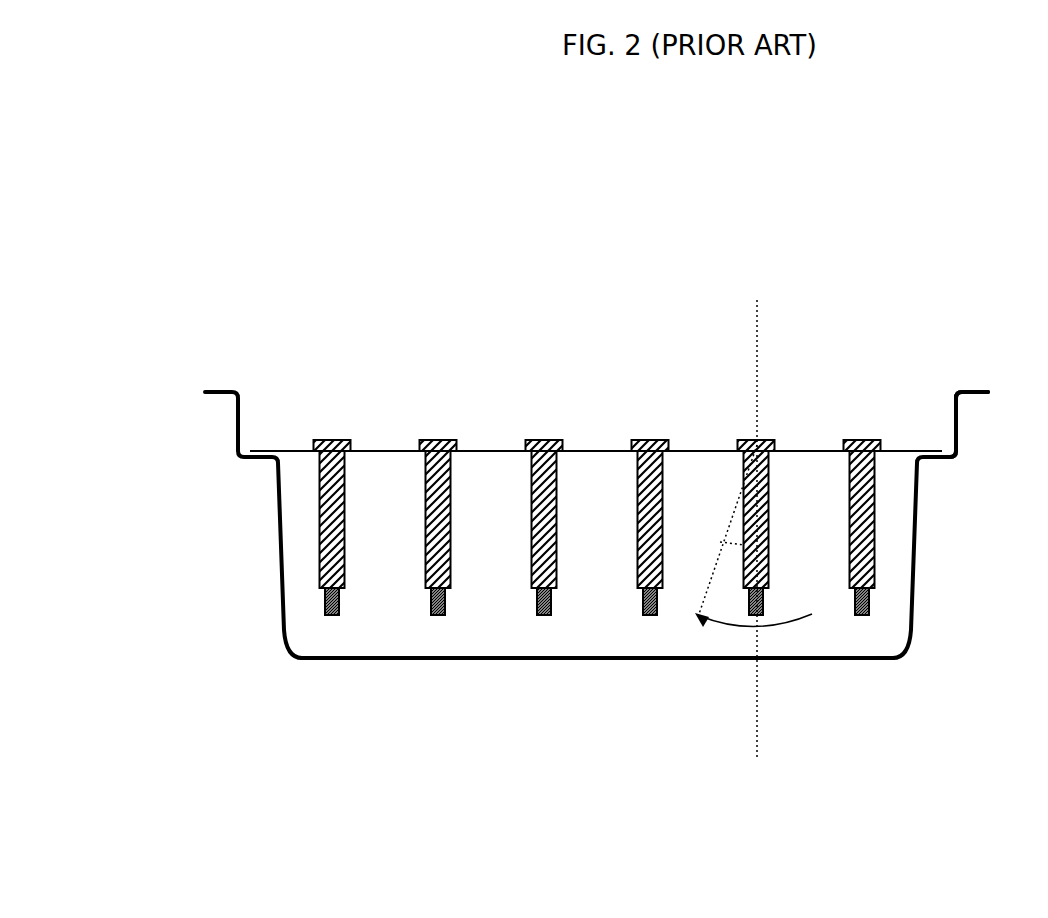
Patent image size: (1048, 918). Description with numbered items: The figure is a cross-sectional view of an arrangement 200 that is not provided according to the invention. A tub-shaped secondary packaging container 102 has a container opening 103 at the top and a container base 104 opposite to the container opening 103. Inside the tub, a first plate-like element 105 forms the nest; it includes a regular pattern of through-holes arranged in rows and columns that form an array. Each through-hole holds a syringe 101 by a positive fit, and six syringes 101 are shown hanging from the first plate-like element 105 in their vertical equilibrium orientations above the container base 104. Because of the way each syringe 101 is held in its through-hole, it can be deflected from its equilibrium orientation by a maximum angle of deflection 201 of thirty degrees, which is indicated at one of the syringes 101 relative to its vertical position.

The arrangement 200 is at (621, 126).
The syringe 101 is at (872, 517).
The secondary packaging container 102 is at (280, 593).
The container opening 103 is at (873, 387).
The container base 104 is at (648, 660).
The first plate-like element 105 is at (285, 452).
The maximum angle of deflection 201 is at (738, 520).